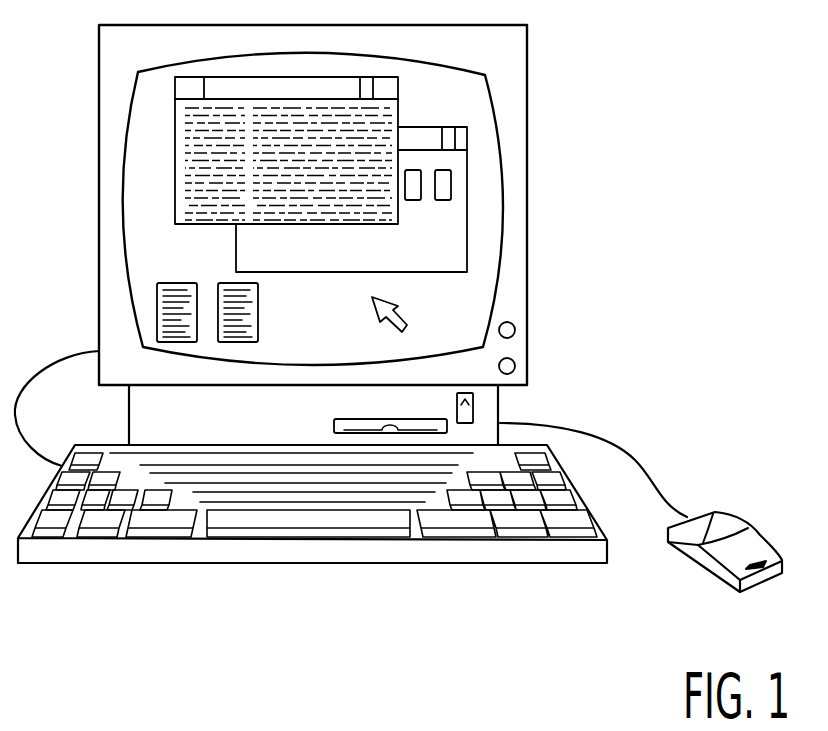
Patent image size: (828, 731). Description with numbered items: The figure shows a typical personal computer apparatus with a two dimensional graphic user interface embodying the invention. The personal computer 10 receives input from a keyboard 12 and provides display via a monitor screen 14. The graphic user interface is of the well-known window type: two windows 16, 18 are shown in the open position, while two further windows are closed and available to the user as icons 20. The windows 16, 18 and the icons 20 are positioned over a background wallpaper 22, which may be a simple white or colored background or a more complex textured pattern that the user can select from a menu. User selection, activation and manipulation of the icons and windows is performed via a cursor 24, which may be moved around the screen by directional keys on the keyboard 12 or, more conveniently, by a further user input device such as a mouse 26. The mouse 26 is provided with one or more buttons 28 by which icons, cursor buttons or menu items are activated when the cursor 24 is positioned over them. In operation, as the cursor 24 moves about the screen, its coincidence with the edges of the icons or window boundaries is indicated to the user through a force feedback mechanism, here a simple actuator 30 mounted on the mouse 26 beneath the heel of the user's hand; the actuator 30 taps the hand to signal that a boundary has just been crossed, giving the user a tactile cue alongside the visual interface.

The personal computer 10 is at (528, 398).
The keyboard 12 is at (560, 557).
The monitor screen 14 is at (513, 268).
The window 16 is at (175, 215).
The window 18 is at (463, 205).
The icons 20 is at (228, 283).
The background wallpaper 22 is at (458, 109).
The cursor 24 is at (404, 322).
The mouse 26 is at (755, 545).
The buttons 28 is at (693, 527).
The actuator 30 is at (760, 574).